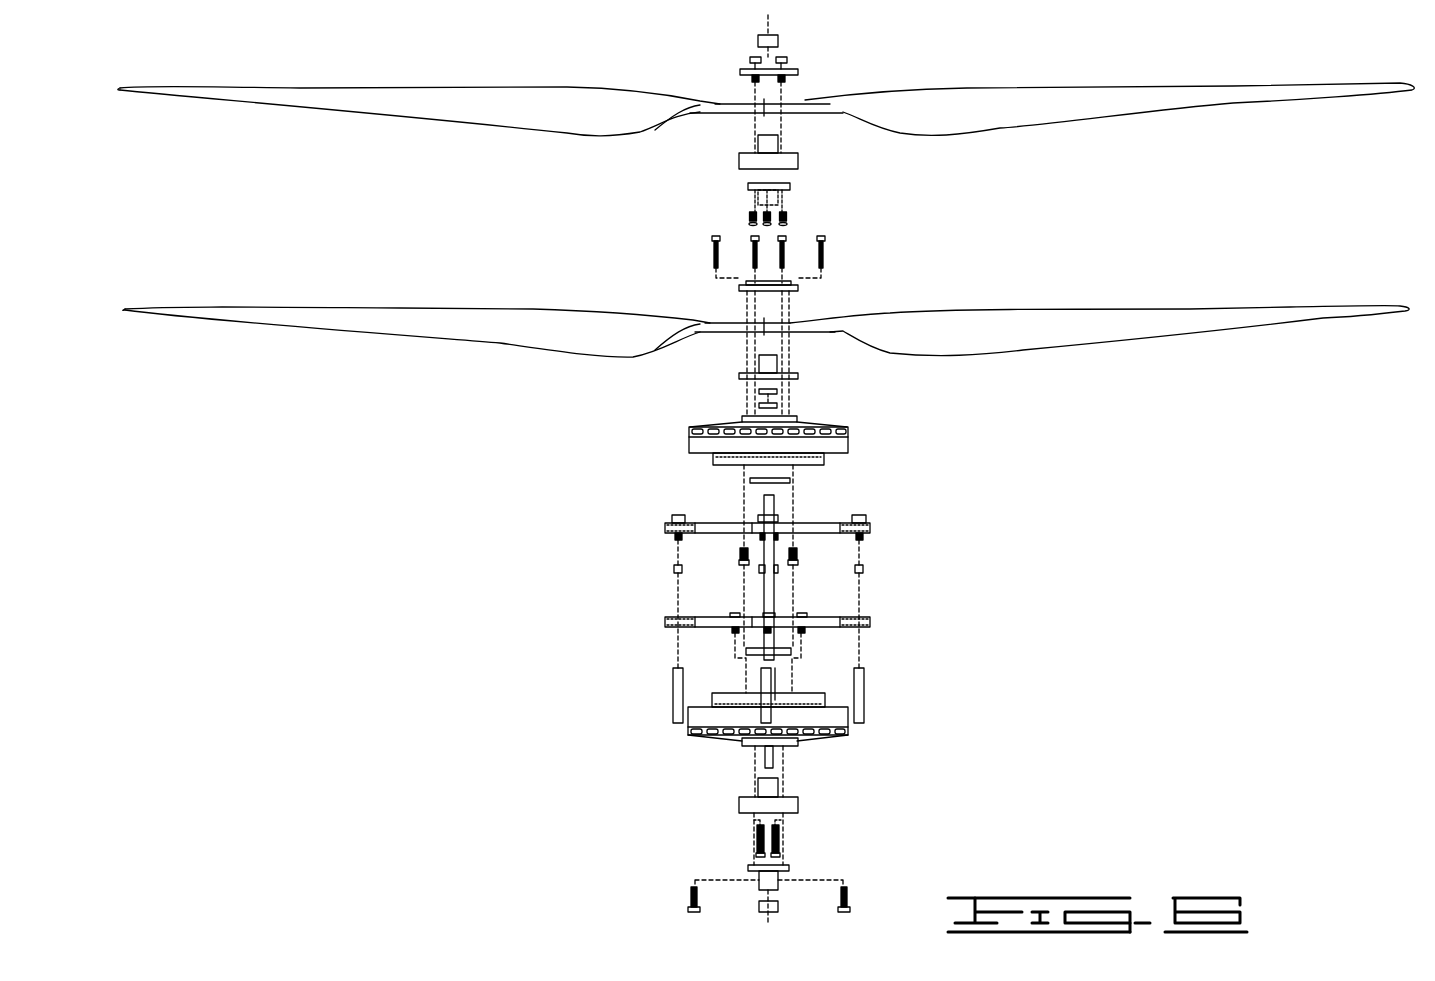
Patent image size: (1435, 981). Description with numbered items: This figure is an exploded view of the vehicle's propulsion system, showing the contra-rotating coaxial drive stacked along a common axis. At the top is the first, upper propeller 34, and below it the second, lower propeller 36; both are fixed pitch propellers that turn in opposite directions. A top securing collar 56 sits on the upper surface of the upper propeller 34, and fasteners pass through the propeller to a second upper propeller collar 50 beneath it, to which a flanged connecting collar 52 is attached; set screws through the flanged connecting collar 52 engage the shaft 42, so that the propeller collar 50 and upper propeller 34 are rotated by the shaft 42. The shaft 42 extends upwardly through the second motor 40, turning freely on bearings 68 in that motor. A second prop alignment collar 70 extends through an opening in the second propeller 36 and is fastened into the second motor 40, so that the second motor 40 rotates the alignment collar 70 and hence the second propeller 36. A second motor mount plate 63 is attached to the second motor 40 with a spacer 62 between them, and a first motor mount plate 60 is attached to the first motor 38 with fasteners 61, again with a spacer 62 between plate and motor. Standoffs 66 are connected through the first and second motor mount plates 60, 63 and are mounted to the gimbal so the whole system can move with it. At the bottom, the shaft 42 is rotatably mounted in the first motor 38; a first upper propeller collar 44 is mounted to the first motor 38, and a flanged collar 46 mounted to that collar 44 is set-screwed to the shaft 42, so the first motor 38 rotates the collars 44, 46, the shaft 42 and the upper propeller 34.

The first upper propeller 34 is at (305, 88).
The second lower propeller 36 is at (1257, 308).
The first motor 38 is at (842, 720).
The second motor 40 is at (847, 440).
The shaft 42 is at (765, 582).
The first upper propeller collar 44 is at (739, 806).
The flanged collar 46 is at (789, 867).
The second upper propeller collar 50 is at (790, 185).
The flanged connecting collar 52 is at (739, 163).
The top securing collar 56 is at (795, 68).
The first motor mount plate 60 is at (872, 622).
The fasteners 61 is at (733, 613).
The spacer 62 is at (750, 482).
The second motor mount plate 63 is at (872, 528).
The standoffs 66 is at (673, 697).
The bearings 68 is at (775, 392).
The second prop alignment collar 70 is at (747, 375).